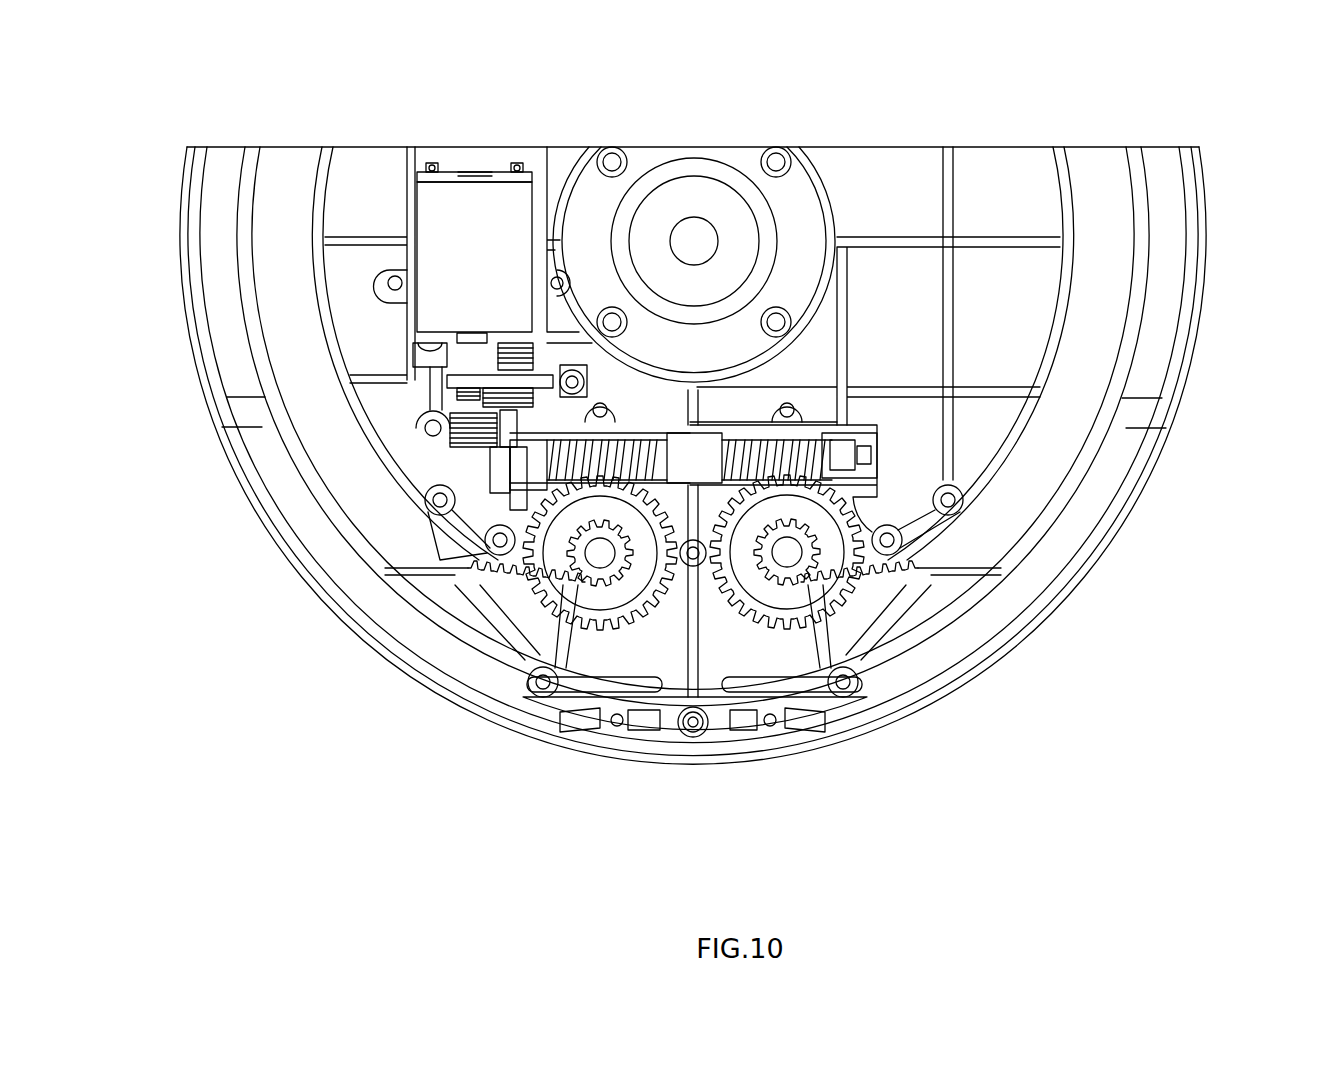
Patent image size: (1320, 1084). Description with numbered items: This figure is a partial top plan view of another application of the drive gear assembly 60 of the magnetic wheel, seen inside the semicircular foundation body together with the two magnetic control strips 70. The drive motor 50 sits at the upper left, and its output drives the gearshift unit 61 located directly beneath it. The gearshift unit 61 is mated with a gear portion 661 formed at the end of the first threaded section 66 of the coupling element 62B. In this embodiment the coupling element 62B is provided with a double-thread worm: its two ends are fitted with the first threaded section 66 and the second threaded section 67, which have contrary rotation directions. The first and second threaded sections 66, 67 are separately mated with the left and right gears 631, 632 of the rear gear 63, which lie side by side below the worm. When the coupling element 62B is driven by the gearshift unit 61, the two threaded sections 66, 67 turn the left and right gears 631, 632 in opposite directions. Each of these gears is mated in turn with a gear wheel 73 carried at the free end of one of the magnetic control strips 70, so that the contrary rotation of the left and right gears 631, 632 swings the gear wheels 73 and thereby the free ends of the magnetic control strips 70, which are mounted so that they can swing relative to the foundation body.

The drive motor 50 is at (470, 215).
The gearshift unit 61 is at (500, 355).
The coupling element 62B is at (713, 442).
The gear portion 661 is at (495, 452).
The first threaded section 66 is at (582, 433).
The drive gear assembly 60 is at (478, 477).
The magnetic control strip 70 is at (250, 313).
The second threaded section 67 is at (823, 437).
The gear wheel 73 is at (578, 582).
The left gear 631 is at (640, 607).
The right gear 632 is at (742, 607).
The rear gear 63 is at (693, 679).